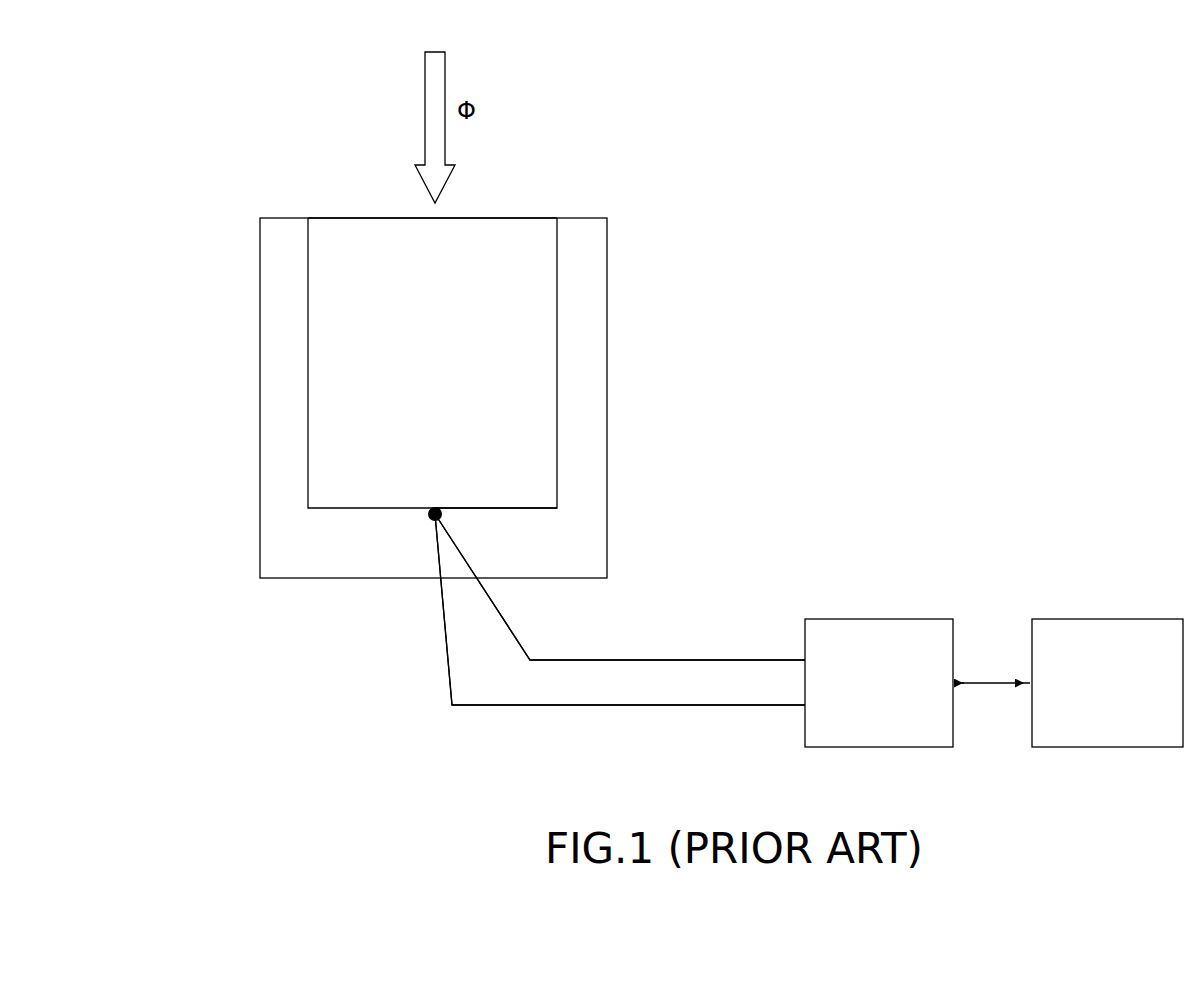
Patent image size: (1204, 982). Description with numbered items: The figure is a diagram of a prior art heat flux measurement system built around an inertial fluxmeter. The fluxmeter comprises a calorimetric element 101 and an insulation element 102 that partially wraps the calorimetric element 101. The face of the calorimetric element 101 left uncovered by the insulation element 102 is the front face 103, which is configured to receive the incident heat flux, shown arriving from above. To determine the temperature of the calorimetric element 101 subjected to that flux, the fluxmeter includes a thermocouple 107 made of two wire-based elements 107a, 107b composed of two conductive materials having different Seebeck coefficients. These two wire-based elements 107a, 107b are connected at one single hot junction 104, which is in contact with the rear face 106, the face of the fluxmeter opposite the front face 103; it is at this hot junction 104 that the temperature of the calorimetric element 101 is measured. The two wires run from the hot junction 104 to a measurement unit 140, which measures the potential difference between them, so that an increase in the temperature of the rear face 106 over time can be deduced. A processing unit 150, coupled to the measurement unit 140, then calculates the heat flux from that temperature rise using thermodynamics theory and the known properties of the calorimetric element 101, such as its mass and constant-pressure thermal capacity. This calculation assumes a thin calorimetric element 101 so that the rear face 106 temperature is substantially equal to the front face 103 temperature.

The calorimetric element 101 is at (557, 337).
The insulation element 102 is at (607, 405).
The front face 103 is at (488, 211).
The hot junction 104 is at (420, 526).
The rear face 106 is at (518, 512).
The thermocouple 107 is at (409, 623).
The wire-based element 107a is at (450, 672).
The wire-based element 107b is at (508, 623).
The measurement unit 140 is at (877, 619).
The processing unit 150 is at (1107, 619).